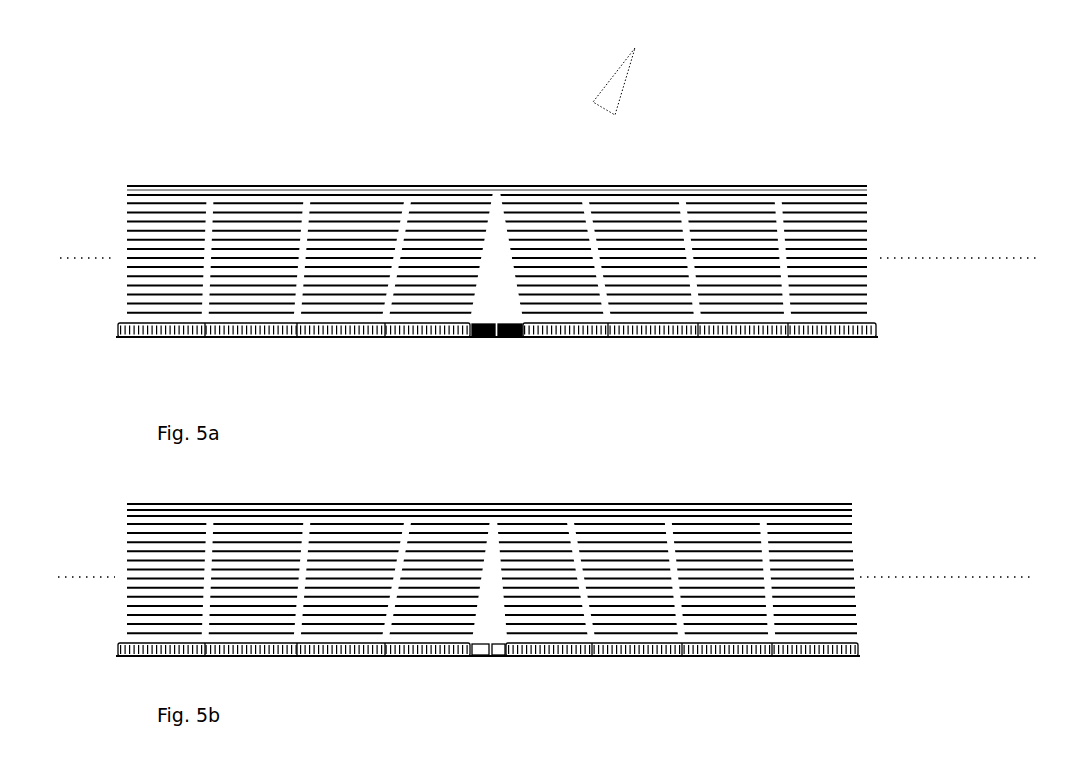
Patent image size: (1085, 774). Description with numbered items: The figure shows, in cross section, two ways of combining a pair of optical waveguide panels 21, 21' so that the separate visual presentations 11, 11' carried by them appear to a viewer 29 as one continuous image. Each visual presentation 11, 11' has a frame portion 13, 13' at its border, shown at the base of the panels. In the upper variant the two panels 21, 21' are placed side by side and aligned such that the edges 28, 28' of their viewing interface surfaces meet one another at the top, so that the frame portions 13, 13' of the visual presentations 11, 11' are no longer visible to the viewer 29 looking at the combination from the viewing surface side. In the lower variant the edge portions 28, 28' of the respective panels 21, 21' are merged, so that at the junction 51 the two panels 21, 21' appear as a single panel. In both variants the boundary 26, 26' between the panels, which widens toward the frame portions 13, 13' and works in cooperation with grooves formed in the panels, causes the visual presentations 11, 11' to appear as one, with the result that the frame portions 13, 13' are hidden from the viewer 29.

In FIG. 5A, the visual presentation 11 is at (273, 372).
In FIG. 5B, the visual presentation 11 is at (273, 691).
In FIG. 5A, the visual presentation 11' is at (728, 367).
In FIG. 5B, the visual presentation 11' is at (720, 688).
In FIG. 5A, the frame portion 13 is at (456, 367).
In FIG. 5B, the frame portion 13 is at (453, 687).
In FIG. 5A, the frame portion 13' is at (540, 367).
In FIG. 5B, the frame portion 13' is at (529, 687).
In FIG. 5A, the optical waveguide panel 21 is at (312, 210).
In FIG. 5B, the optical waveguide panel 21 is at (291, 535).
In FIG. 5A, the optical waveguide panel 21' is at (688, 215).
In FIG. 5B, the optical waveguide panel 21' is at (677, 524).
In FIG. 5A, the boundary 26 is at (407, 230).
In FIG. 5B, the boundary 26 is at (396, 557).
In FIG. 5A, the boundary 26' is at (614, 230).
In FIG. 5B, the boundary 26' is at (610, 557).
In FIG. 5A, the edge 28 is at (463, 161).
In FIG. 5A, the edge 28' is at (533, 161).
In FIG. 5A, the viewer 29 is at (742, 68).
In FIG. 5B, the junction 51 is at (497, 505).